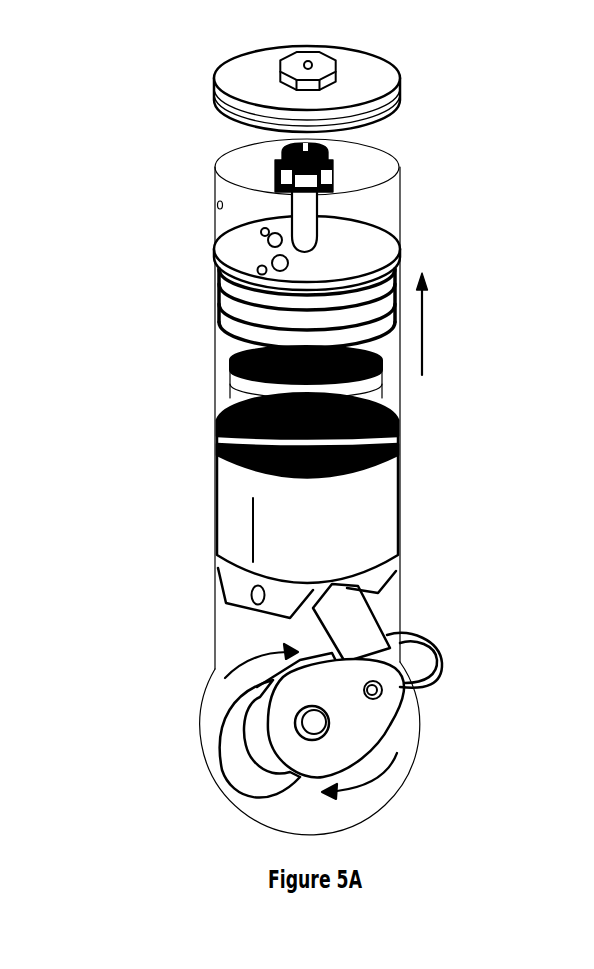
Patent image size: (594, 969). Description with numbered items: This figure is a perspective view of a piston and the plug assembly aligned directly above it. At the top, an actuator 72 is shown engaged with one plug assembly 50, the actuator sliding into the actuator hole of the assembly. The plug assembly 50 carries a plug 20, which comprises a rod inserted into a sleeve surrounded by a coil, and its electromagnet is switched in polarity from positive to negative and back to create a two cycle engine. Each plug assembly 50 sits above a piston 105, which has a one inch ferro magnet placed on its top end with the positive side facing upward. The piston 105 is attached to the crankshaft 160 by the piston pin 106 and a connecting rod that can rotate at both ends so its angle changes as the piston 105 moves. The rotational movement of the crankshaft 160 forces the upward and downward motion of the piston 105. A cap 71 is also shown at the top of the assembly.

The cap 71 is at (373, 66).
The plug 20 is at (330, 148).
The actuator 72 is at (333, 178).
The plug assembly 50 is at (232, 247).
The piston 105 is at (230, 499).
The piston pin 106 is at (255, 603).
The crankshaft 160 is at (312, 723).